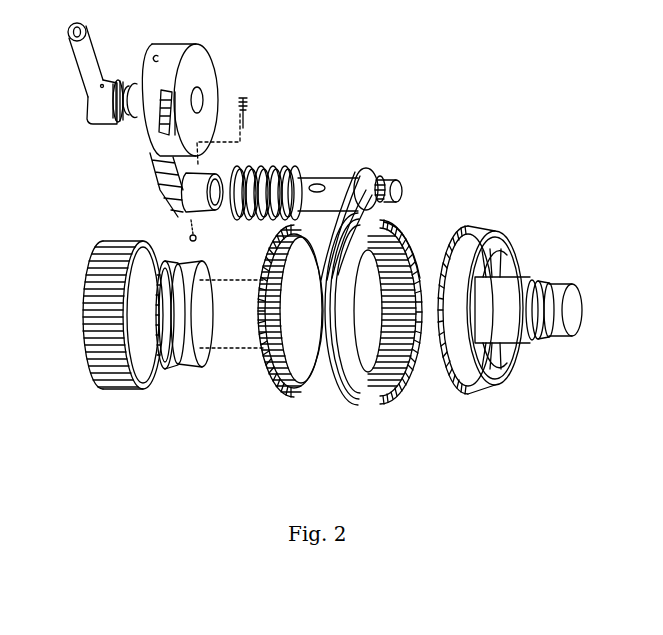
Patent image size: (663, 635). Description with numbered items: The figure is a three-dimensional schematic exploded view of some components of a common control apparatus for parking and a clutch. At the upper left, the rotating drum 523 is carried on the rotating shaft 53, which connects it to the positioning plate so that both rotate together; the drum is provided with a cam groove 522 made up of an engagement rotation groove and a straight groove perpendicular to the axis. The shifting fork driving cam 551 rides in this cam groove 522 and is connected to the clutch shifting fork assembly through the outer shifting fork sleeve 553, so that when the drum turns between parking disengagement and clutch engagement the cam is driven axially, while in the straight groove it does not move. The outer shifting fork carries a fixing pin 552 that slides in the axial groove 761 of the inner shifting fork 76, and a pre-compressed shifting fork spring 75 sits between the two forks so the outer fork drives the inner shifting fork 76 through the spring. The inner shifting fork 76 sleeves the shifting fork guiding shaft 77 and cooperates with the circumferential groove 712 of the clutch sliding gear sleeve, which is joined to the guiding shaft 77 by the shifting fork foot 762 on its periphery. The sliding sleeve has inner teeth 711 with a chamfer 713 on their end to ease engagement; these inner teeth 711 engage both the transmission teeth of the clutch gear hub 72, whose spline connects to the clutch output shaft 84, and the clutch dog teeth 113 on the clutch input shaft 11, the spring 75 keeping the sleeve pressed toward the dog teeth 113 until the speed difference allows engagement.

The clutch input shaft 11 is at (520, 383).
The clutch dog tooth 113 is at (470, 400).
The rotating shaft 53 is at (138, 90).
The cam groove 522 is at (148, 130).
The rotating drum 523 is at (200, 63).
The fixing pin 552 is at (242, 106).
The shifting fork driving cam 551 is at (150, 158).
The outer shifting fork sleeve 553 is at (195, 195).
The shifting fork spring 75 is at (282, 168).
The inner shifting fork 76 is at (344, 170).
The axial groove 761 is at (320, 180).
The shifting fork foot 762 is at (381, 180).
The shifting fork guiding shaft 77 is at (393, 183).
The inner tooth 711 is at (397, 395).
The circumferential groove 712 is at (364, 407).
The chamfer 713 is at (420, 278).
The clutch gear hub 72 is at (288, 399).
The clutch output shaft 84 is at (238, 350).